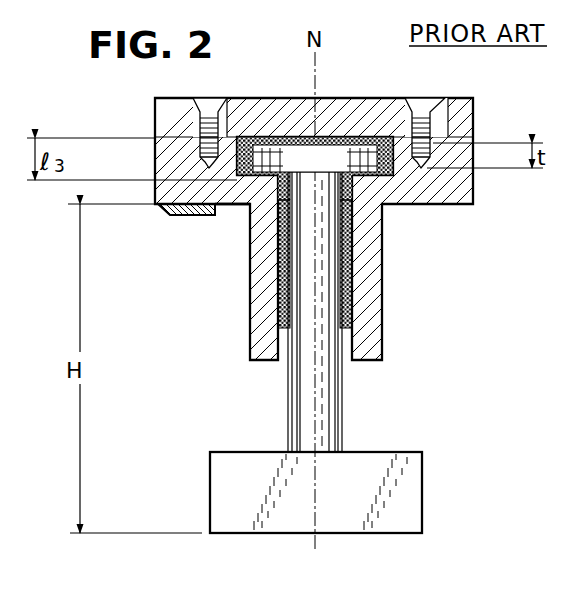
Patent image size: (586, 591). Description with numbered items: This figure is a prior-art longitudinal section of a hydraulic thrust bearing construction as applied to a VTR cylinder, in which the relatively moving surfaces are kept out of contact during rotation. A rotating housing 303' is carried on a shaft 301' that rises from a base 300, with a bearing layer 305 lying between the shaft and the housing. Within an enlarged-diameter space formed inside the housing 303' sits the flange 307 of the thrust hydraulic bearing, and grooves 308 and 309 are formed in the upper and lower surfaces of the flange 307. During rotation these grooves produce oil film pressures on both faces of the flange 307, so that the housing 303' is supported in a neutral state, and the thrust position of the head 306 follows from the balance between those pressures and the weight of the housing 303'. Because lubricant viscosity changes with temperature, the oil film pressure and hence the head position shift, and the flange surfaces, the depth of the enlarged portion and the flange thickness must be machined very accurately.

The base block 300 is at (410, 502).
The shaft 301' is at (356, 312).
The housing 303' is at (293, 295).
The bearing layer 305 is at (350, 290).
The head 306 is at (185, 215).
The flange 307 is at (355, 157).
The groove 308 is at (258, 168).
The groove 309 is at (247, 205).